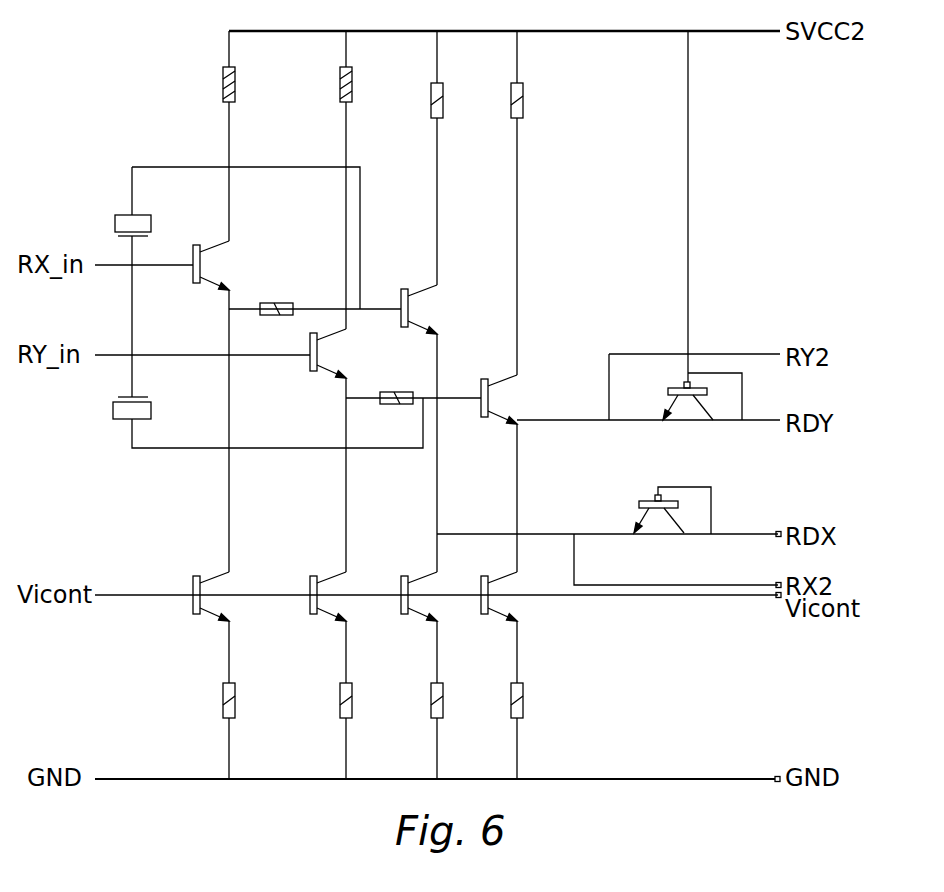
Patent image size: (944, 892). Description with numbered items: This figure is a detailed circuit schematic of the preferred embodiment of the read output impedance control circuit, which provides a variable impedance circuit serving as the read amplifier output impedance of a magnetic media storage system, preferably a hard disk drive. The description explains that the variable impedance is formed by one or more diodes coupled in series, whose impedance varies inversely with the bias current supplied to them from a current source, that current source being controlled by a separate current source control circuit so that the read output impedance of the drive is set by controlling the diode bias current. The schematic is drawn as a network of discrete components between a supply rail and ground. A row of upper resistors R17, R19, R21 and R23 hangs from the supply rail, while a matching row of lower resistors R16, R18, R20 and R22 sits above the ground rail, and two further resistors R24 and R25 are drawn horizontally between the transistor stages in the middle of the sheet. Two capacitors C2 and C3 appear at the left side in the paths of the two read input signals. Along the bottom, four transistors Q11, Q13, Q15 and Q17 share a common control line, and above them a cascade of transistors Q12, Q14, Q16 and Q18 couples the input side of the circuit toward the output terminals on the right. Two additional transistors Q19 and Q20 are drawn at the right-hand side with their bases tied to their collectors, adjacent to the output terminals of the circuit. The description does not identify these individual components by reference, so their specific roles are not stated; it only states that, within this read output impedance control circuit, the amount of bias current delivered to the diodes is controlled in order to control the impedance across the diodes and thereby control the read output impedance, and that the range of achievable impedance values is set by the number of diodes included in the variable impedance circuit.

The resistor R17 is at (215, 88).
The resistor R19 is at (332, 88).
The resistor R21 is at (424, 100).
The resistor R23 is at (505, 100).
The resistor R16 is at (216, 700).
The resistor R18 is at (333, 700).
The resistor R20 is at (424, 700).
The resistor R22 is at (505, 700).
The resistor R24 is at (277, 325).
The resistor R25 is at (396, 412).
The capacitor C2 is at (141, 213).
The capacitor C3 is at (150, 410).
The transistor Q11 is at (202, 584).
The transistor Q12 is at (226, 265).
The transistor Q13 is at (319, 584).
The transistor Q14 is at (341, 353).
The transistor Q15 is at (411, 584).
The transistor Q16 is at (434, 309).
The transistor Q17 is at (491, 584).
The transistor Q18 is at (514, 399).
The transistor Q19 is at (659, 529).
The transistor Q20 is at (688, 415).